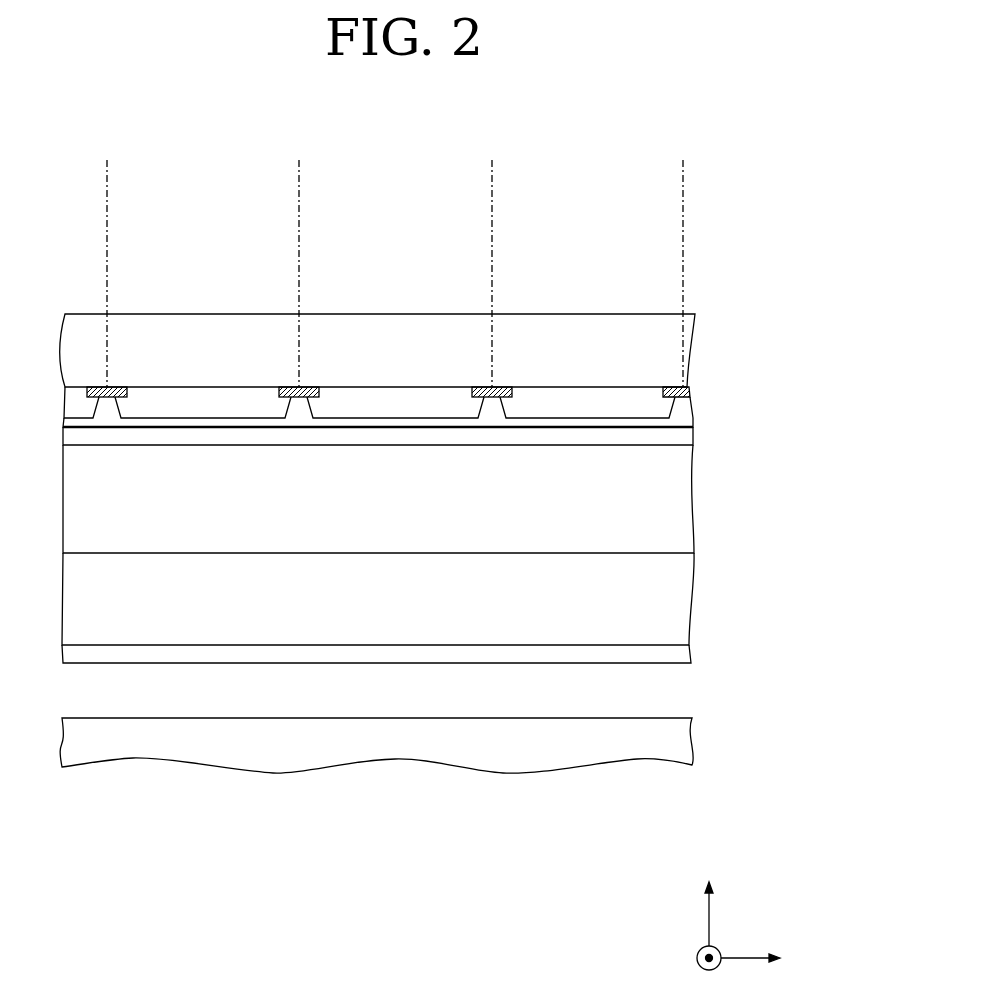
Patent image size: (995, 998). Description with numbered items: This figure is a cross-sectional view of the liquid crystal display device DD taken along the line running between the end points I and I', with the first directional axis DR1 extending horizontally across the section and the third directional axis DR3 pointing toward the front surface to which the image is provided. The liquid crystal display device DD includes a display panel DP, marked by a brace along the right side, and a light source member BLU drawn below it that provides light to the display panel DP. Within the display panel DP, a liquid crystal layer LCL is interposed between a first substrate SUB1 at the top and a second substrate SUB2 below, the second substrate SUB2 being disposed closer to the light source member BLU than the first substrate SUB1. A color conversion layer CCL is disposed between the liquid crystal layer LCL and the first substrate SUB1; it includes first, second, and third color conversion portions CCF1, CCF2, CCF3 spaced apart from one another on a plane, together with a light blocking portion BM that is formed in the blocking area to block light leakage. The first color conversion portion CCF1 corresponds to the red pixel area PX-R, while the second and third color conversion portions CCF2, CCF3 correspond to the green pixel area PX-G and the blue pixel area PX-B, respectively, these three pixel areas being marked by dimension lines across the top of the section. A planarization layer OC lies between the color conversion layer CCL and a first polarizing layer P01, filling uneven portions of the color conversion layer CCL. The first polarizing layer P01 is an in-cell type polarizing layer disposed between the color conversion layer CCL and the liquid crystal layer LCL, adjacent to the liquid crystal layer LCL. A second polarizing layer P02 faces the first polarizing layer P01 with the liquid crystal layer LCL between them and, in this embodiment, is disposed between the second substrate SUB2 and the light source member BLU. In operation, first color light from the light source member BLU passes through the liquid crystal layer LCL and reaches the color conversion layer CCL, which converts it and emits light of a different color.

The liquid crystal display device DD is at (722, 223).
The red pixel area PX-R is at (299, 173).
The green pixel area PX-G is at (492, 173).
The blue pixel area PX-B is at (683, 173).
The color conversion layer CCL is at (580, 251).
The first color conversion portion CCF1 is at (198, 397).
The second color conversion portion CCF2 is at (403, 397).
The third color conversion portion CCF3 is at (552, 397).
The light blocking portion BM is at (310, 390).
The first substrate SUB1 is at (680, 358).
The planarization layer OC is at (682, 418).
The first polarizing layer P01 is at (682, 435).
The liquid crystal layer LCL is at (682, 513).
The second substrate SUB2 is at (682, 605).
The second polarizing layer P02 is at (678, 652).
The display panel DP is at (788, 345).
The light source member BLU is at (678, 743).
The section line end point I is at (63, 785).
The section line end point I' is at (692, 785).
The first directional axis DR1 is at (762, 959).
The third directional axis DR3 is at (709, 899).